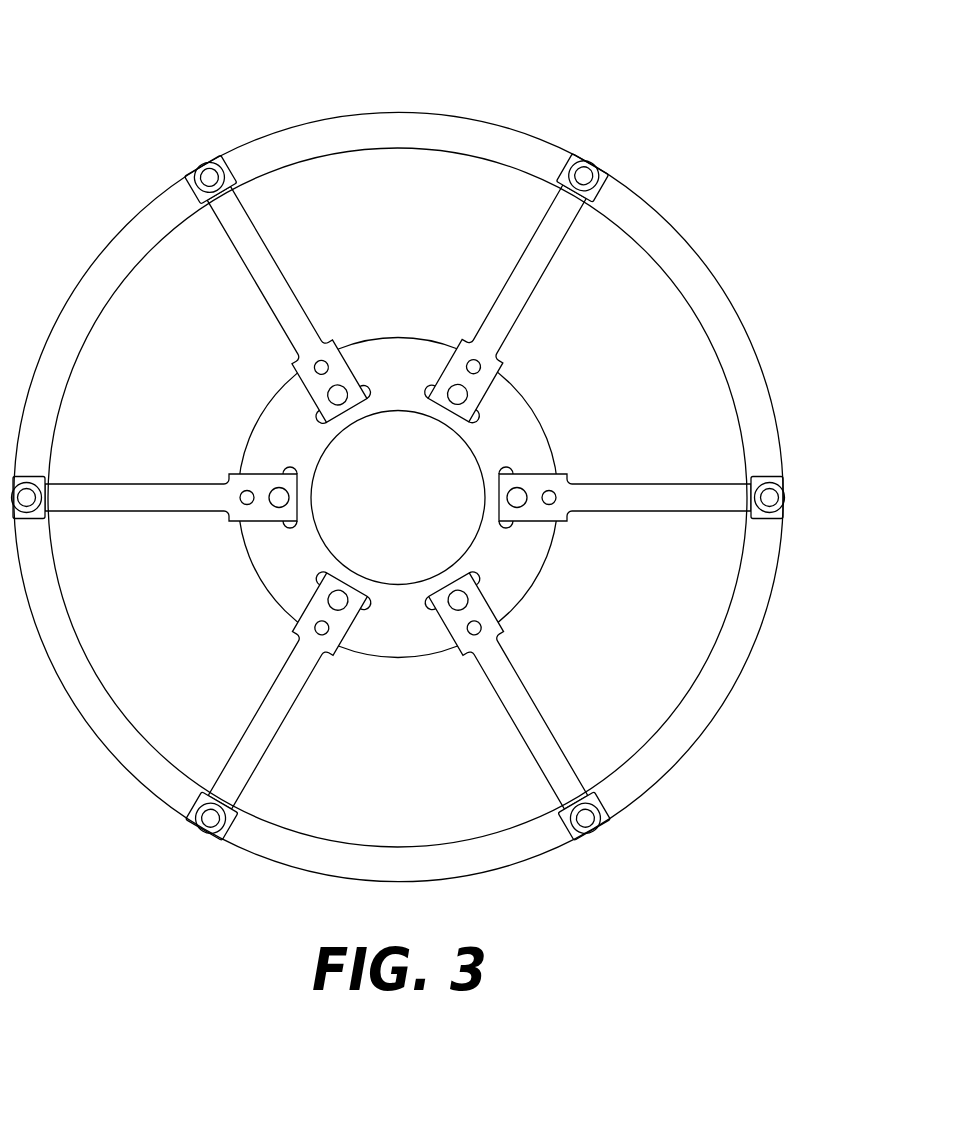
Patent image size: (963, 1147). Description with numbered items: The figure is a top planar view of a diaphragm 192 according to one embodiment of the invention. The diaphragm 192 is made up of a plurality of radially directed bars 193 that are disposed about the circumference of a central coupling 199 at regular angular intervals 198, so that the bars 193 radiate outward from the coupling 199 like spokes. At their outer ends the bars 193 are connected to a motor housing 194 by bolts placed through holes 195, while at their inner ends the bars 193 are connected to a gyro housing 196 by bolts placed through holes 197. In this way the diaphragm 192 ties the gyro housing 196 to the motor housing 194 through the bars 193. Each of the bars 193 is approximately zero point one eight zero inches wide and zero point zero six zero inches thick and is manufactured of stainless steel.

The diaphragm 192 is at (558, 92).
The radially directed bars 193 is at (683, 504).
The motor housing 194 is at (748, 392).
The holes 195 is at (785, 497).
The gyro housing 196 is at (625, 529).
The holes 197 is at (517, 502).
The regular angular intervals 198 is at (510, 749).
The coupling 199 is at (322, 545).